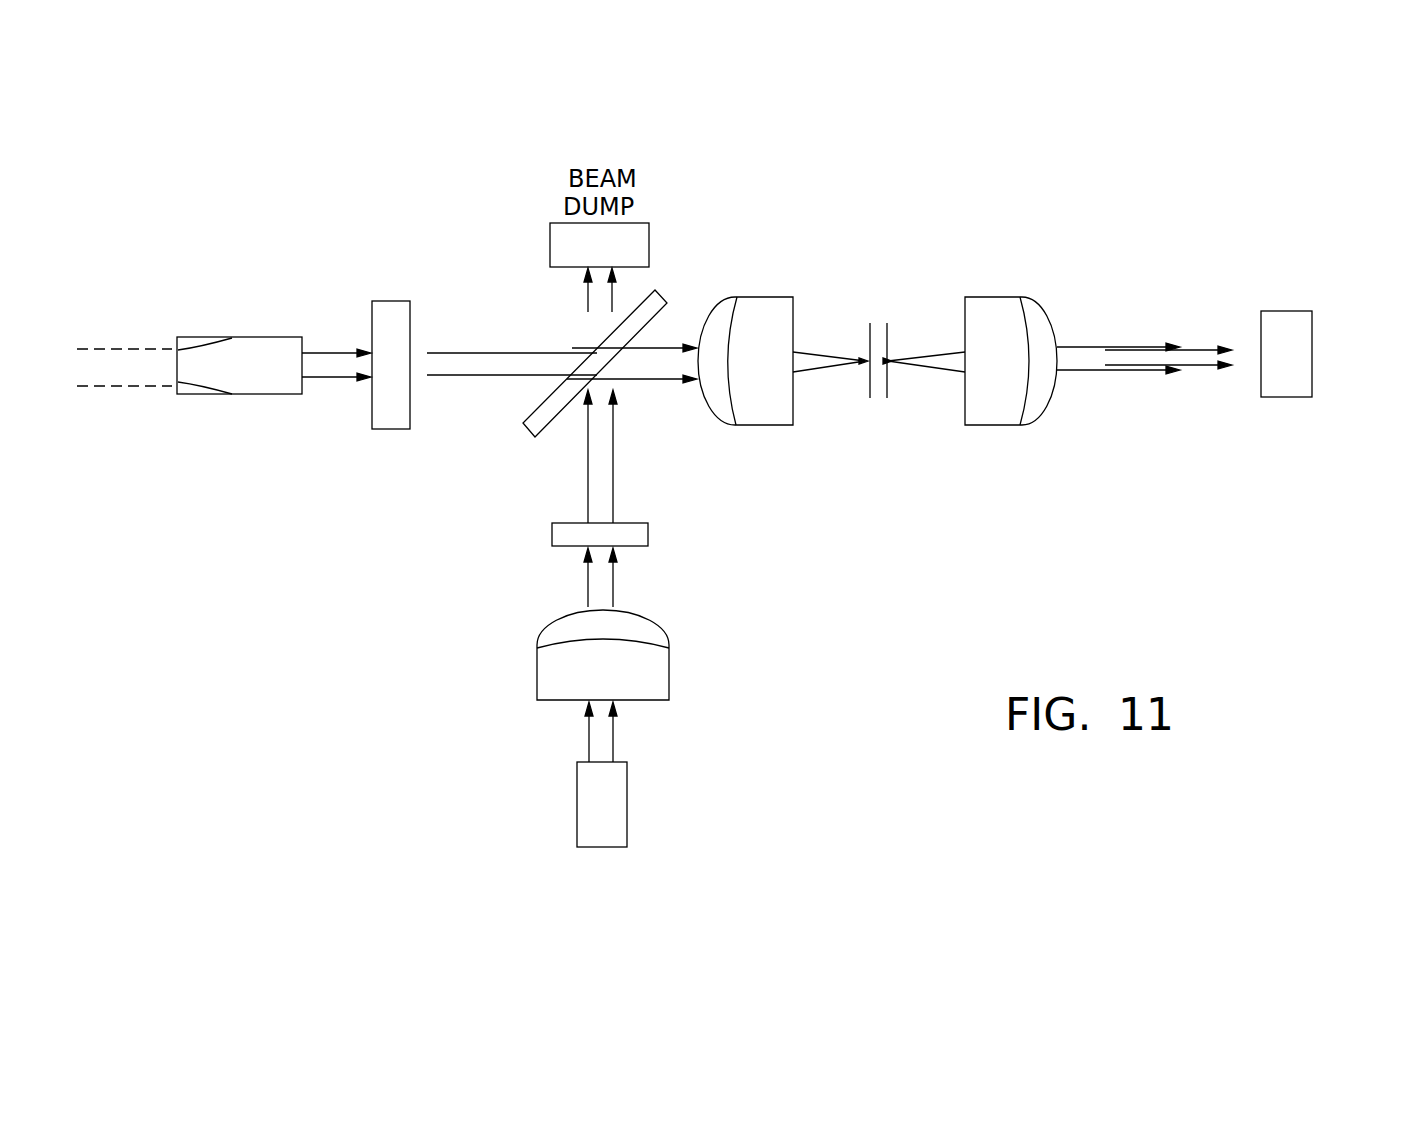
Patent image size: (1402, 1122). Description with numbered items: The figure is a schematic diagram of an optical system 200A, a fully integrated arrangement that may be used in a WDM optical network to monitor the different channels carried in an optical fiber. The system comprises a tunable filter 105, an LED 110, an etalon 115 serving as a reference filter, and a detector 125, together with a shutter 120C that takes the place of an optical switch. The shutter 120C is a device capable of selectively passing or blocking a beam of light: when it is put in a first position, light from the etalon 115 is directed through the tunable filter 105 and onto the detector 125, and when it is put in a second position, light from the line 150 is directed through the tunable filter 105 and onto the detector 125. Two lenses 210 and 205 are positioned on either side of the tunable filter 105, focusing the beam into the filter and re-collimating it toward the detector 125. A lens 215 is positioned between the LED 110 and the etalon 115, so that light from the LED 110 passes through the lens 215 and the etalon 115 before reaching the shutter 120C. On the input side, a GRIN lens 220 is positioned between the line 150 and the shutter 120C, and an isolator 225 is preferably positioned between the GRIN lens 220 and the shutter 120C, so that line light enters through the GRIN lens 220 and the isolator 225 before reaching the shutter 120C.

The line 150 is at (124, 394).
The GRIN lens 220 is at (248, 325).
The isolator 225 is at (382, 438).
The shutter 120C is at (534, 445).
The lens 210 is at (710, 292).
The tunable filter 105 is at (880, 450).
The lens 205 is at (1050, 290).
The detector 125 is at (1282, 300).
The etalon 115 is at (662, 538).
The lens 215 is at (522, 680).
The LED 110 is at (565, 801).
The optical system 200A is at (328, 572).